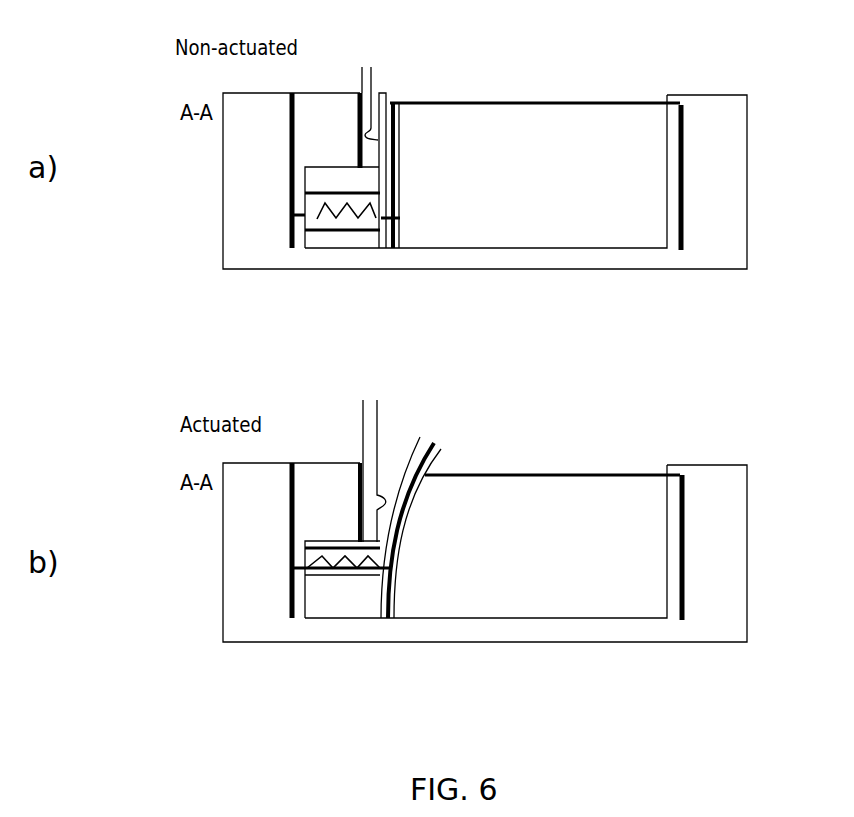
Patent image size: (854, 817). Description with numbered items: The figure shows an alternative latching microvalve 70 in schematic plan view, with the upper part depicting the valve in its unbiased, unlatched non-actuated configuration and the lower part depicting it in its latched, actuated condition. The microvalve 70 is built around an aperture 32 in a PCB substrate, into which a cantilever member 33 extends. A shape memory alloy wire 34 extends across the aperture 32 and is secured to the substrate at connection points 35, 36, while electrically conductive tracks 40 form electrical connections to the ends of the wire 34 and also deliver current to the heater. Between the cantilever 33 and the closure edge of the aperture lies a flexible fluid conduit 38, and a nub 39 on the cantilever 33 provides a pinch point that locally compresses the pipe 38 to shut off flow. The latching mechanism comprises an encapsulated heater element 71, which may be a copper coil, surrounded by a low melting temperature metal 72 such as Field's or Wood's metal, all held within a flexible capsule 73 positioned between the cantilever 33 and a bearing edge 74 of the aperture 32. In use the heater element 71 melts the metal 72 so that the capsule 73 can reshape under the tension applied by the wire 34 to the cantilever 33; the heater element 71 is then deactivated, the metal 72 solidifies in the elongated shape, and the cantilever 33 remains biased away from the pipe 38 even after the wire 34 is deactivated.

The latching microvalve 70 is at (138, 104).
The fluid conduit 38 is at (372, 78).
The connection point 36 is at (388, 100).
The cantilever member 33 is at (400, 128).
The nub 39 is at (384, 495).
The shape memory alloy wire 34 is at (613, 107).
The aperture 32 is at (486, 356).
The connection point 35 is at (678, 103).
The electrically conductive tracks 40 is at (400, 196).
The bearing edge 74 is at (305, 180).
The low melting temperature metal 72 is at (345, 223).
The heater element 71 is at (328, 209).
The flexible capsule 73 is at (318, 232).